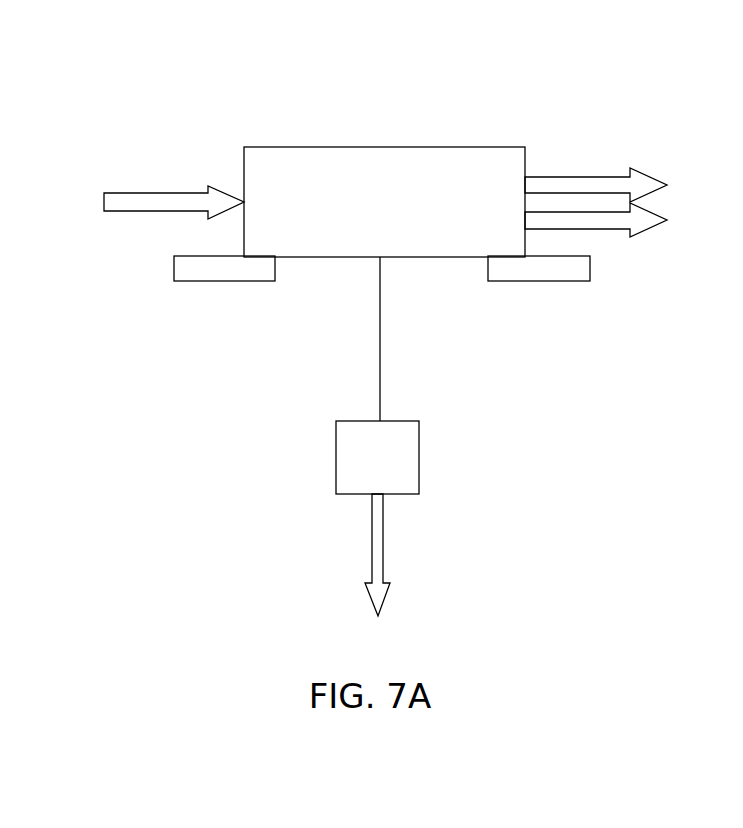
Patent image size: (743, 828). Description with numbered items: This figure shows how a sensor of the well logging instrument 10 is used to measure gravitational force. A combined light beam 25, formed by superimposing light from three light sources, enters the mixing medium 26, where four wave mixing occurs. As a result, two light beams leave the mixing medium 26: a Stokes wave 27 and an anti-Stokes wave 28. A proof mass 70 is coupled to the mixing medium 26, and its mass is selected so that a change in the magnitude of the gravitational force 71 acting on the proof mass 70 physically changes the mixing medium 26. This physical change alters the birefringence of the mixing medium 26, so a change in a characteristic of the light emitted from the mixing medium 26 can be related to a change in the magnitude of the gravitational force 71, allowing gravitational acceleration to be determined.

The well logging instrument 10 is at (202, 281).
The combined light beam 25 is at (192, 197).
The mixing medium 26 is at (312, 145).
The Stokes wave 27 is at (618, 177).
The anti-Stokes wave 28 is at (618, 230).
The proof mass 70 is at (419, 458).
The gravitational force 71 is at (383, 567).